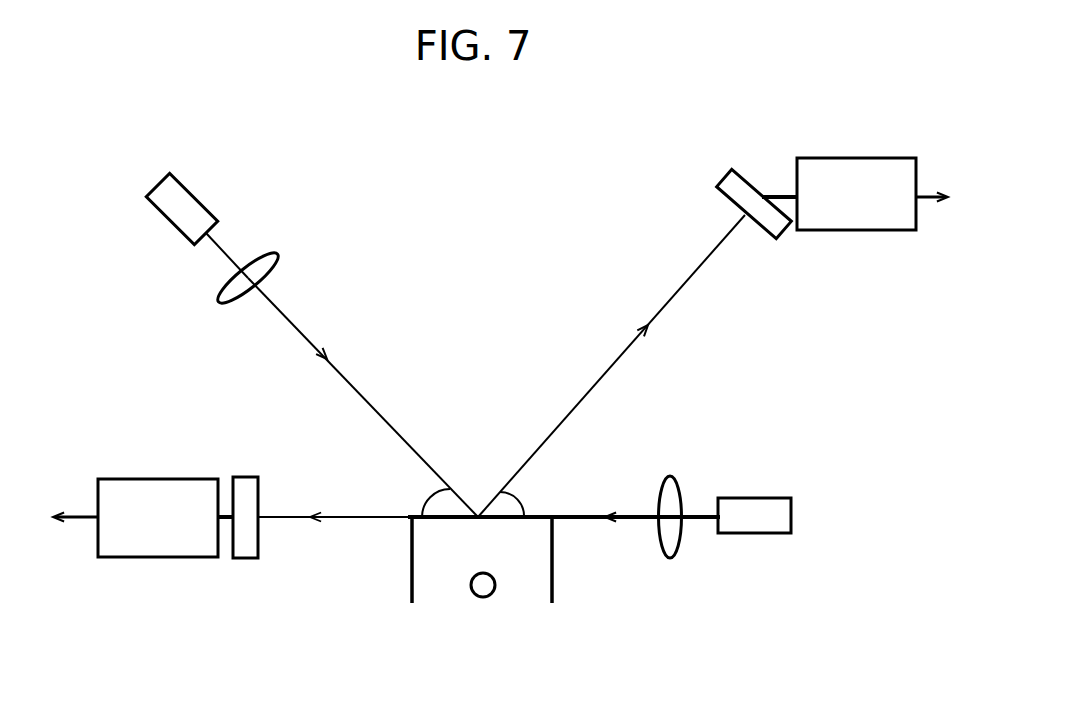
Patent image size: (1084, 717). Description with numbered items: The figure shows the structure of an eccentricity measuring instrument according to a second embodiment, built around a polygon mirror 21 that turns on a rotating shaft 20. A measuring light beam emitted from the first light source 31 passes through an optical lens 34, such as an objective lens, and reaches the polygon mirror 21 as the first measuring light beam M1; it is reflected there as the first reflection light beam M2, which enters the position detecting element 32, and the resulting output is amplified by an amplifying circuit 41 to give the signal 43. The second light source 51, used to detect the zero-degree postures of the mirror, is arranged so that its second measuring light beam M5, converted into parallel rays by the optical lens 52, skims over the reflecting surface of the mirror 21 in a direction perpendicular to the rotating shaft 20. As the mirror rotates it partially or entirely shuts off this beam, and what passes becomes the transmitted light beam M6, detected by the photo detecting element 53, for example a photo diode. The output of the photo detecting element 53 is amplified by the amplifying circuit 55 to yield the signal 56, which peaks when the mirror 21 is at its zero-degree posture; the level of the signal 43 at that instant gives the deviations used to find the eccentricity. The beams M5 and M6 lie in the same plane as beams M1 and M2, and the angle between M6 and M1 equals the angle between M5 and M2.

The rotating shaft 20 is at (496, 585).
The polygon mirror 21 is at (540, 565).
The first light source 31 is at (193, 208).
The optical lens 34 is at (268, 253).
The first measuring light beam M1 is at (307, 337).
The first reflection light beam M2 is at (680, 290).
The position detecting element 32 is at (733, 180).
The amplifying circuit 41 is at (852, 157).
The signal 43 is at (928, 192).
The second light source 51 is at (750, 507).
The optical lens 52 is at (672, 493).
The second measuring light beam M5 is at (585, 513).
The transmitted light beam M6 is at (347, 513).
The photo detecting element 53 is at (248, 483).
The amplifying circuit 55 is at (173, 478).
The signal 56 is at (77, 515).